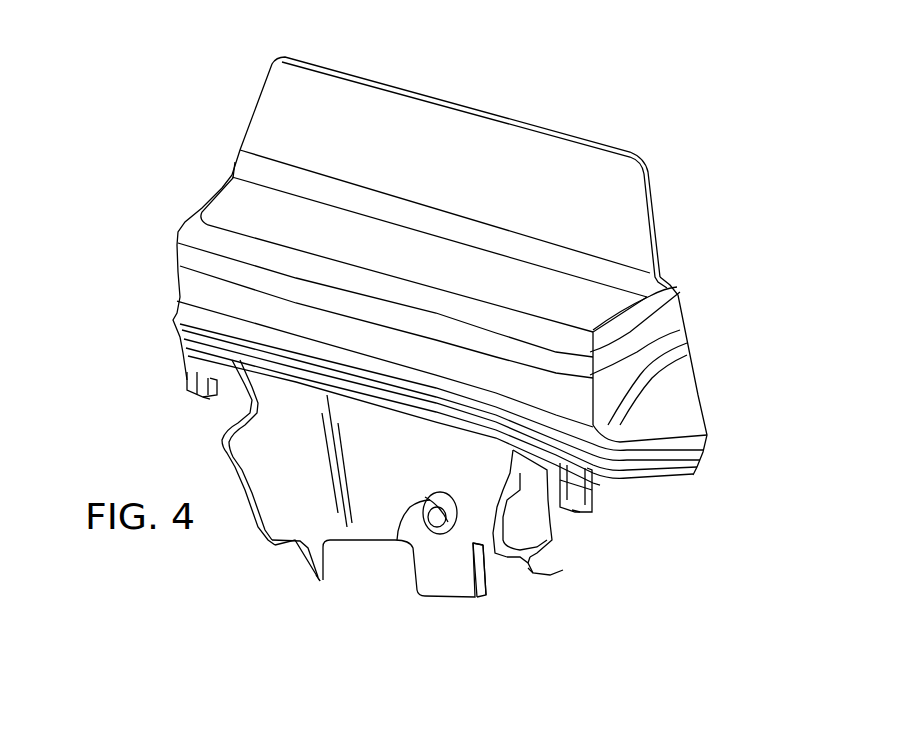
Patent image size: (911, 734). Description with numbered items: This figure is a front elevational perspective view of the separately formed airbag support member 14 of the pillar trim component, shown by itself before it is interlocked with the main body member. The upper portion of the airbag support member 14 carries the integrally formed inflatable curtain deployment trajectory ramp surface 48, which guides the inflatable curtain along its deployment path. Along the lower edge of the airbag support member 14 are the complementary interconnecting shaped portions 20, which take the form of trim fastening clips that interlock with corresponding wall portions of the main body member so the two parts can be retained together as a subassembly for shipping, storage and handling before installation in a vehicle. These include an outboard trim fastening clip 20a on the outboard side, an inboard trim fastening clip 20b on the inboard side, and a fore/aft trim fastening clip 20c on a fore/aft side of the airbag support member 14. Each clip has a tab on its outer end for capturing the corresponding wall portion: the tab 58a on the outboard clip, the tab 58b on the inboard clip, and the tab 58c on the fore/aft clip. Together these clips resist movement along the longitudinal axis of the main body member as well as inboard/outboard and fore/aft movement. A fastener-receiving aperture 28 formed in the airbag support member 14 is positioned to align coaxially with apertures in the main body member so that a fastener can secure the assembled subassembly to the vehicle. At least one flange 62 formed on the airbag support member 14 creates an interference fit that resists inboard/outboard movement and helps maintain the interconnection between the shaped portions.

The airbag support member 14 is at (185, 165).
The inflatable curtain deployment trajectory ramp surface 48 is at (227, 243).
The complementary interconnecting shaped portions 20 is at (165, 397).
The outboard trim fastening clip 20a is at (500, 590).
The inboard trim fastening clip 20b is at (308, 580).
The fore/aft trim fastening clip 20c is at (200, 403).
The fastener-receiving aperture 28 is at (397, 540).
The tab 58a is at (503, 573).
The tab 58b is at (310, 577).
The tab 58c is at (187, 385).
The flange 62 is at (228, 462).